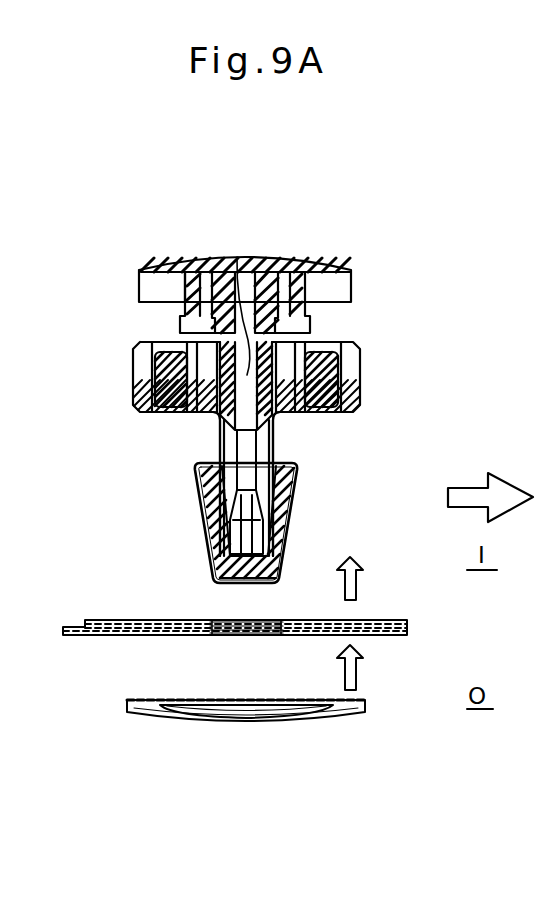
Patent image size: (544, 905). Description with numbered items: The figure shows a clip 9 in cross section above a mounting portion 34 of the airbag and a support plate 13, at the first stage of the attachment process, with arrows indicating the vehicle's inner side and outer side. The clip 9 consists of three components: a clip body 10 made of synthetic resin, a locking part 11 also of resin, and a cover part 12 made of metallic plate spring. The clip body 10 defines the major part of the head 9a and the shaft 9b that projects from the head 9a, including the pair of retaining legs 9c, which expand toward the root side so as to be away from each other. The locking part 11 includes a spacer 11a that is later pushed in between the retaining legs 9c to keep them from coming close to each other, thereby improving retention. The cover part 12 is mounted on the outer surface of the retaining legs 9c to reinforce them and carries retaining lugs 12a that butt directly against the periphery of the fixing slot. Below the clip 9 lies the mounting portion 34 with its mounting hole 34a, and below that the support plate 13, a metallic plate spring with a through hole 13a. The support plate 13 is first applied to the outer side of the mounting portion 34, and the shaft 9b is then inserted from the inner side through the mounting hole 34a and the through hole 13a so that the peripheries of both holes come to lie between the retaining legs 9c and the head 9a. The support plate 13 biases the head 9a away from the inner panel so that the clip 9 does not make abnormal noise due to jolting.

The clip 9 is at (465, 238).
The head 9a is at (130, 388).
The shaft 9b is at (235, 438).
The retaining legs 9c is at (184, 470).
The clip body 10 is at (374, 387).
The locking part 11 is at (370, 281).
The spacer 11a is at (237, 257).
The cover part 12 is at (320, 490).
The retaining lugs 12a is at (199, 487).
The support plate 13 is at (174, 731).
The through hole 13a is at (245, 704).
The mounting portion 34 is at (395, 653).
The mounting hole 34a is at (234, 636).